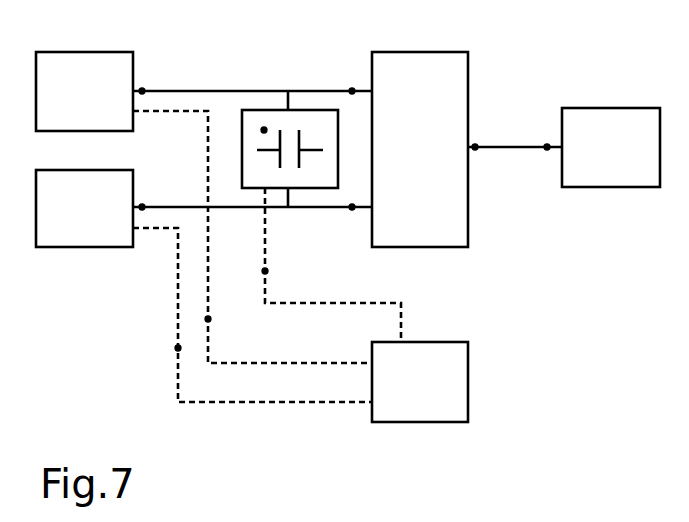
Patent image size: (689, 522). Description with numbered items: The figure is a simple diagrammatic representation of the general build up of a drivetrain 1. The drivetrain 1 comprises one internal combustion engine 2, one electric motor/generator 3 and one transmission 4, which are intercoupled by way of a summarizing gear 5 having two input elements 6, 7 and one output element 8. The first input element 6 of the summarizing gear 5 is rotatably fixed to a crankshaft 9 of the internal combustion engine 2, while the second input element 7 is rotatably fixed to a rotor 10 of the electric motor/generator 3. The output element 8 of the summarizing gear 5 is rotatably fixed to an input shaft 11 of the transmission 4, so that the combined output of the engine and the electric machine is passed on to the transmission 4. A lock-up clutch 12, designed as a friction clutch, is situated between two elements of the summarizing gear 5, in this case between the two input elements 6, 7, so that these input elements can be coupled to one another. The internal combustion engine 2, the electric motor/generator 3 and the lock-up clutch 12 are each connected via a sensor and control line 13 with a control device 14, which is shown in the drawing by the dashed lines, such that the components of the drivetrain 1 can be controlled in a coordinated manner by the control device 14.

The drivetrain 1 is at (510, 289).
The internal combustion engine 2 is at (74, 106).
The electric motor/generator 3 is at (74, 221).
The transmission 4 is at (600, 157).
The summarizing gear 5 is at (408, 164).
The first input element 6 is at (351, 89).
The second input element 7 is at (351, 209).
The output element 8 is at (477, 146).
The crankshaft 9 is at (143, 90).
The rotor 10 is at (143, 206).
The input shaft 11 is at (546, 149).
The lock-up clutch 12 is at (263, 128).
The sensor and control line 13 is at (263, 273).
The control device 14 is at (402, 396).